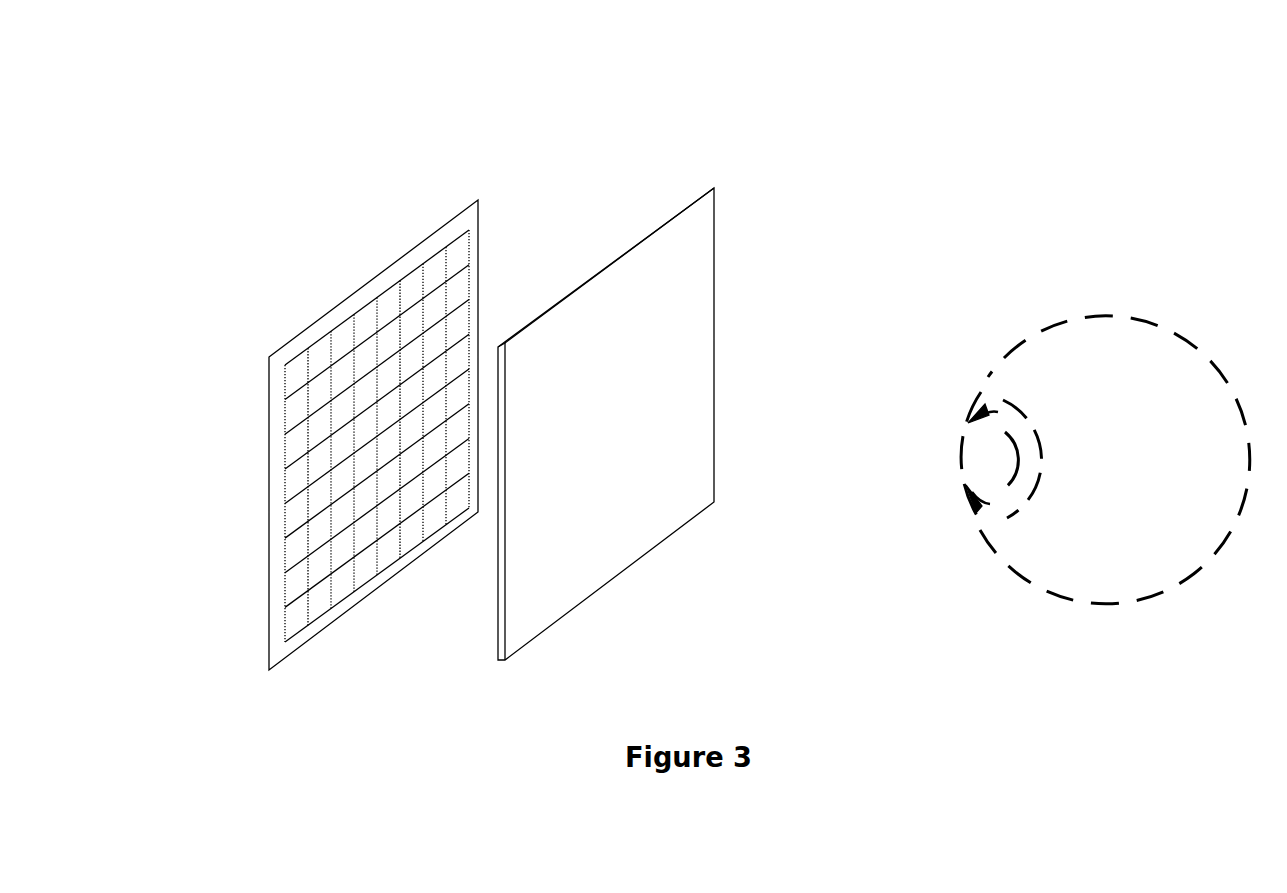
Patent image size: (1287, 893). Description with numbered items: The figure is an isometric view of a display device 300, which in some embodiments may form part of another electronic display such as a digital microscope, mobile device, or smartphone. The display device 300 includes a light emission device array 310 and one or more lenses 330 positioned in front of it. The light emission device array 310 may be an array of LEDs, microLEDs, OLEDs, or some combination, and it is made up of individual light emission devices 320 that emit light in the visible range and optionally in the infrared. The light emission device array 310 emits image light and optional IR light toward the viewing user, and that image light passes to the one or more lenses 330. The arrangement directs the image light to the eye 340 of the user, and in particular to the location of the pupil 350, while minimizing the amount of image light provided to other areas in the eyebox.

The display device 300 is at (303, 100).
The light emission device array 310 is at (269, 487).
The light emission devices 320 is at (385, 292).
The lenses 330 is at (690, 202).
The eye 340 is at (1107, 313).
The pupil 350 is at (992, 483).